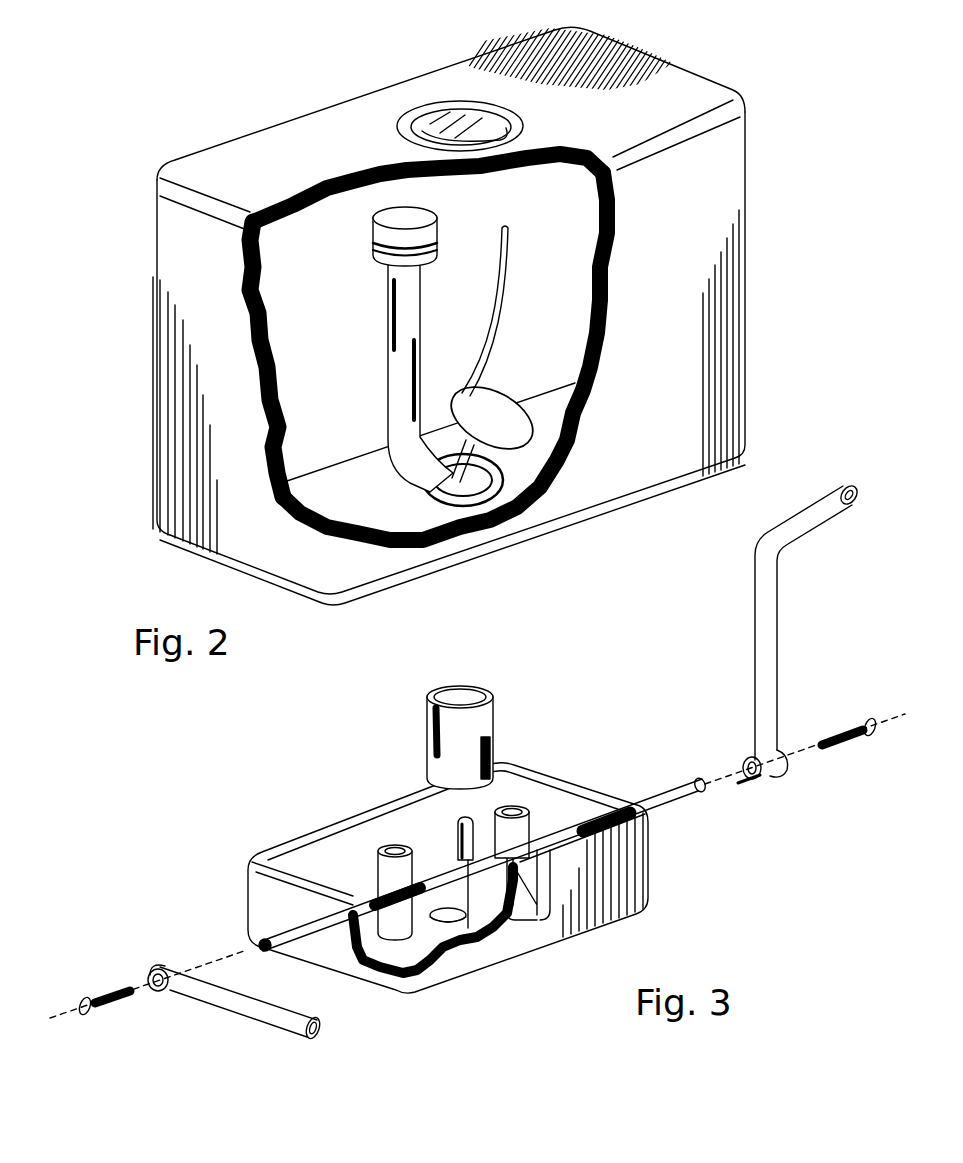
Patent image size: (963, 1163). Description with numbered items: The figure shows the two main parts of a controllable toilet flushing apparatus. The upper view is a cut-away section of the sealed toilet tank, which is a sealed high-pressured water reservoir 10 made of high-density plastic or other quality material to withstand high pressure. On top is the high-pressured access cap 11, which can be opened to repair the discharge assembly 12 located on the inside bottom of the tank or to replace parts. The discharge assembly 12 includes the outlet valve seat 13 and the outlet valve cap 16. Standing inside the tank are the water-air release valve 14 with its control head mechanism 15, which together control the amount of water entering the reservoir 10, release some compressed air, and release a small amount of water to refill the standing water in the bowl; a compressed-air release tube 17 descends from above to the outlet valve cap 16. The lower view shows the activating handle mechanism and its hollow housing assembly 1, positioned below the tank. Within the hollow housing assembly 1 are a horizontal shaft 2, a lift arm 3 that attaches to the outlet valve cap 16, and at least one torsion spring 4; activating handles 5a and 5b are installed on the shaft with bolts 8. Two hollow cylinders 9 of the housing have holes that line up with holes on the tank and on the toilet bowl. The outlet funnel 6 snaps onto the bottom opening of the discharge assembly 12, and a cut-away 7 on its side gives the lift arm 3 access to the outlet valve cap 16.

In FIG. 3, the hollow housing assembly 1 is at (643, 853).
In FIG. 3, the horizontal shaft 2 is at (682, 797).
In FIG. 3, the lift arm 3 is at (460, 833).
In FIG. 3, the torsion spring 4 is at (603, 812).
In FIG. 3, the activating handle 5a is at (253, 1013).
In FIG. 3, the activating handle 5b is at (807, 527).
In FIG. 3, the outlet funnel 6 is at (480, 692).
In FIG. 3, the cut-away on a side of the outlet funnel 7 is at (498, 742).
In FIG. 3, the bolts 8 is at (873, 732).
In FIG. 3, the hollow cylinders 9 is at (390, 850).
In FIG. 2, the sealed high-pressured water reservoir 10 is at (300, 135).
In FIG. 2, the high-pressured access cap 11 is at (428, 115).
In FIG. 2, the discharge assembly 12 is at (425, 490).
In FIG. 2, the outlet valve seat 13 is at (491, 470).
In FIG. 2, the water-air release valve 14 is at (393, 350).
In FIG. 2, the control head mechanism 15 is at (425, 214).
In FIG. 2, the outlet valve cap 16 is at (490, 396).
In FIG. 2, the compressed-air release tube 17 is at (507, 272).